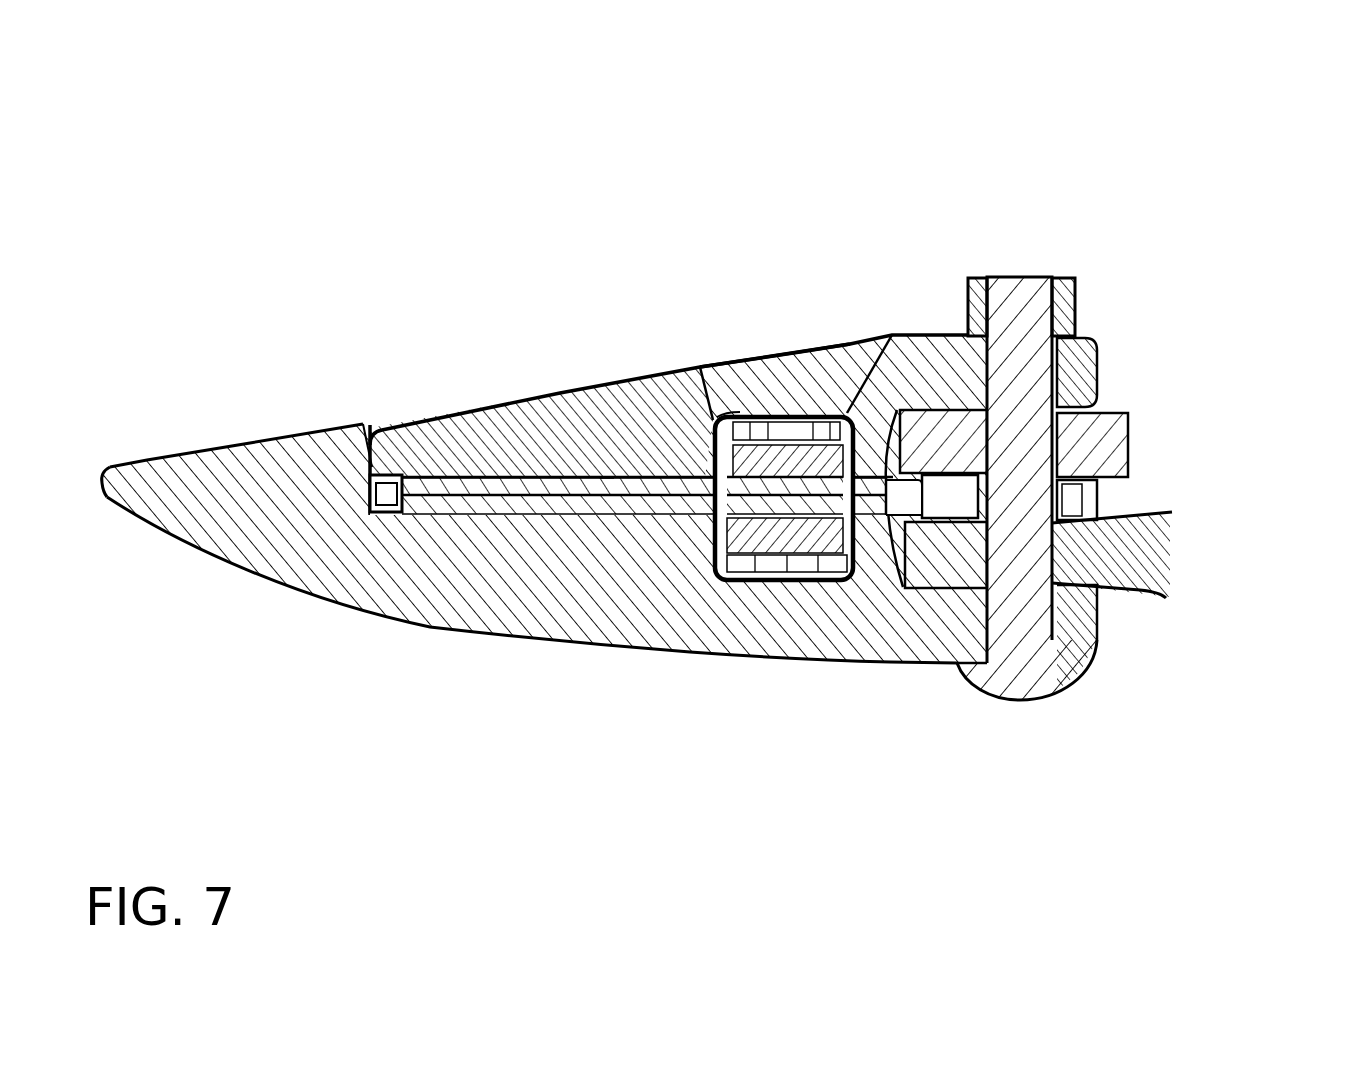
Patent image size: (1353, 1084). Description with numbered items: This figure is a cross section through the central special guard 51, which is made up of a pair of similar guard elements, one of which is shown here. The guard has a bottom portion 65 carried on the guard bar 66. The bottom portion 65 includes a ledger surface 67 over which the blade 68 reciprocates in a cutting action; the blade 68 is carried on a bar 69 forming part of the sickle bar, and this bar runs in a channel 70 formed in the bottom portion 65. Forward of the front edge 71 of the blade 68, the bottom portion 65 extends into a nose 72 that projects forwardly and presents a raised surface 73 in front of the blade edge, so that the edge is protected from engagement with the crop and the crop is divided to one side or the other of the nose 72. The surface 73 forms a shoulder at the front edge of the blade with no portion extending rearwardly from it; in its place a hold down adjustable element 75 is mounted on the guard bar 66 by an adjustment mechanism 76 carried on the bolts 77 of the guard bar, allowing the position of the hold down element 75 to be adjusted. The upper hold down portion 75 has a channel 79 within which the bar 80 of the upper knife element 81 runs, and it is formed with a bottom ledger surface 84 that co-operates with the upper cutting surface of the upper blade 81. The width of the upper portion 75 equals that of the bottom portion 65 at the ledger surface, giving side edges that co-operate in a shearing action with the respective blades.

The central special guard 51 is at (720, 280).
The bottom portion 65 is at (713, 652).
The guard bar 66 is at (1132, 548).
The ledger surface 67 is at (507, 513).
The blade 68 is at (488, 477).
The bar 69 is at (870, 580).
The channel 70 is at (780, 558).
The front edge 71 is at (411, 430).
The nose 72 is at (250, 513).
The raised surface 73 is at (360, 440).
The hold down adjustable element 75 is at (757, 373).
The adjustment mechanism 76 is at (1130, 380).
The bolts 77 is at (1020, 293).
The channel 79 is at (892, 335).
The bar 80 is at (700, 367).
The upper knife element 81 is at (607, 477).
The bottom ledger surface 84 is at (557, 510).